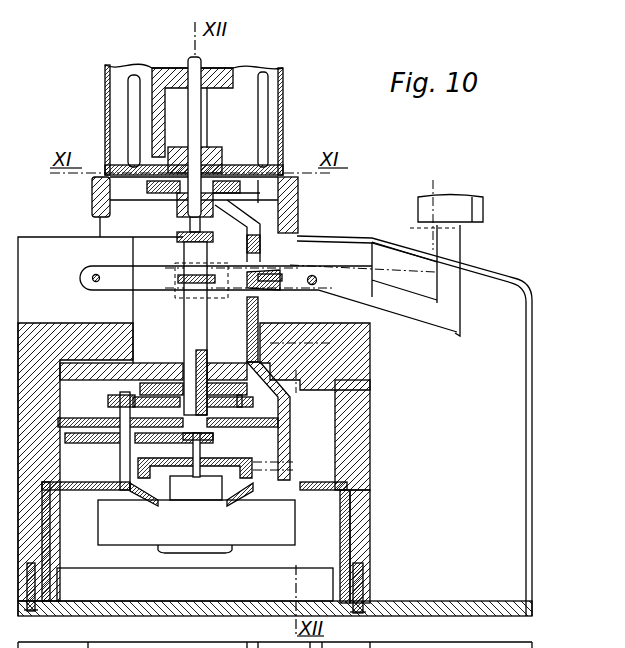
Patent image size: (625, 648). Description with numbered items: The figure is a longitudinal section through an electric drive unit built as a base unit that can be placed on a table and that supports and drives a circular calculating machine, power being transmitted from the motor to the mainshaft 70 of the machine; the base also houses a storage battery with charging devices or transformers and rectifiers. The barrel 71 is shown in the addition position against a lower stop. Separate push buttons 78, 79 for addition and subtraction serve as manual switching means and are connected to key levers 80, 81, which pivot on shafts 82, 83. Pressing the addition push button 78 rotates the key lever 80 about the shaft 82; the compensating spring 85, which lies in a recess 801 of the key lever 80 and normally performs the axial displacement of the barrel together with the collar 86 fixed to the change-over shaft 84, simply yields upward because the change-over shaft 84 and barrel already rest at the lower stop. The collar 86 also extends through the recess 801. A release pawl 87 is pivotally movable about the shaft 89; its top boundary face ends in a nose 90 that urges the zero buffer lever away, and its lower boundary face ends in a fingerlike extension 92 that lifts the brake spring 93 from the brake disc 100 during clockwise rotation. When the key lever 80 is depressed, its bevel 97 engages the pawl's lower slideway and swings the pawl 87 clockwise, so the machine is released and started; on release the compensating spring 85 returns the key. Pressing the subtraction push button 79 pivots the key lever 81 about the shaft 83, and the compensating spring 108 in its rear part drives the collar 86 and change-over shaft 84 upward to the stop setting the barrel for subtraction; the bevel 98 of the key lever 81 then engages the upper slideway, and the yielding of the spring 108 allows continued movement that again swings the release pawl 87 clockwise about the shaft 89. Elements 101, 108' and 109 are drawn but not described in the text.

The mainshaft 70 is at (201, 112).
The barrel 71 is at (158, 113).
The push button 78 is at (478, 205).
The push button 79 is at (410, 228).
The key lever 80 is at (452, 325).
The key lever 81 is at (425, 280).
The shaft 82 is at (86, 283).
The shaft 83 is at (315, 277).
The change-over shaft 84 is at (190, 338).
The compensating spring 85 is at (262, 238).
The collar 86 is at (186, 276).
The release pawl 87 is at (251, 305).
The shaft 89 is at (362, 335).
The nose 90 is at (292, 232).
The fingerlike extension 92 is at (291, 448).
The brake spring 93 is at (140, 470).
The bevel 97 is at (270, 284).
The bevel 98 is at (264, 272).
The brake disc 100 is at (228, 465).
The housing 101 is at (280, 527).
The compensating spring 108 is at (212, 304).
The screw 108' is at (388, 588).
The casing 109 is at (515, 530).
The recess 801 is at (220, 277).